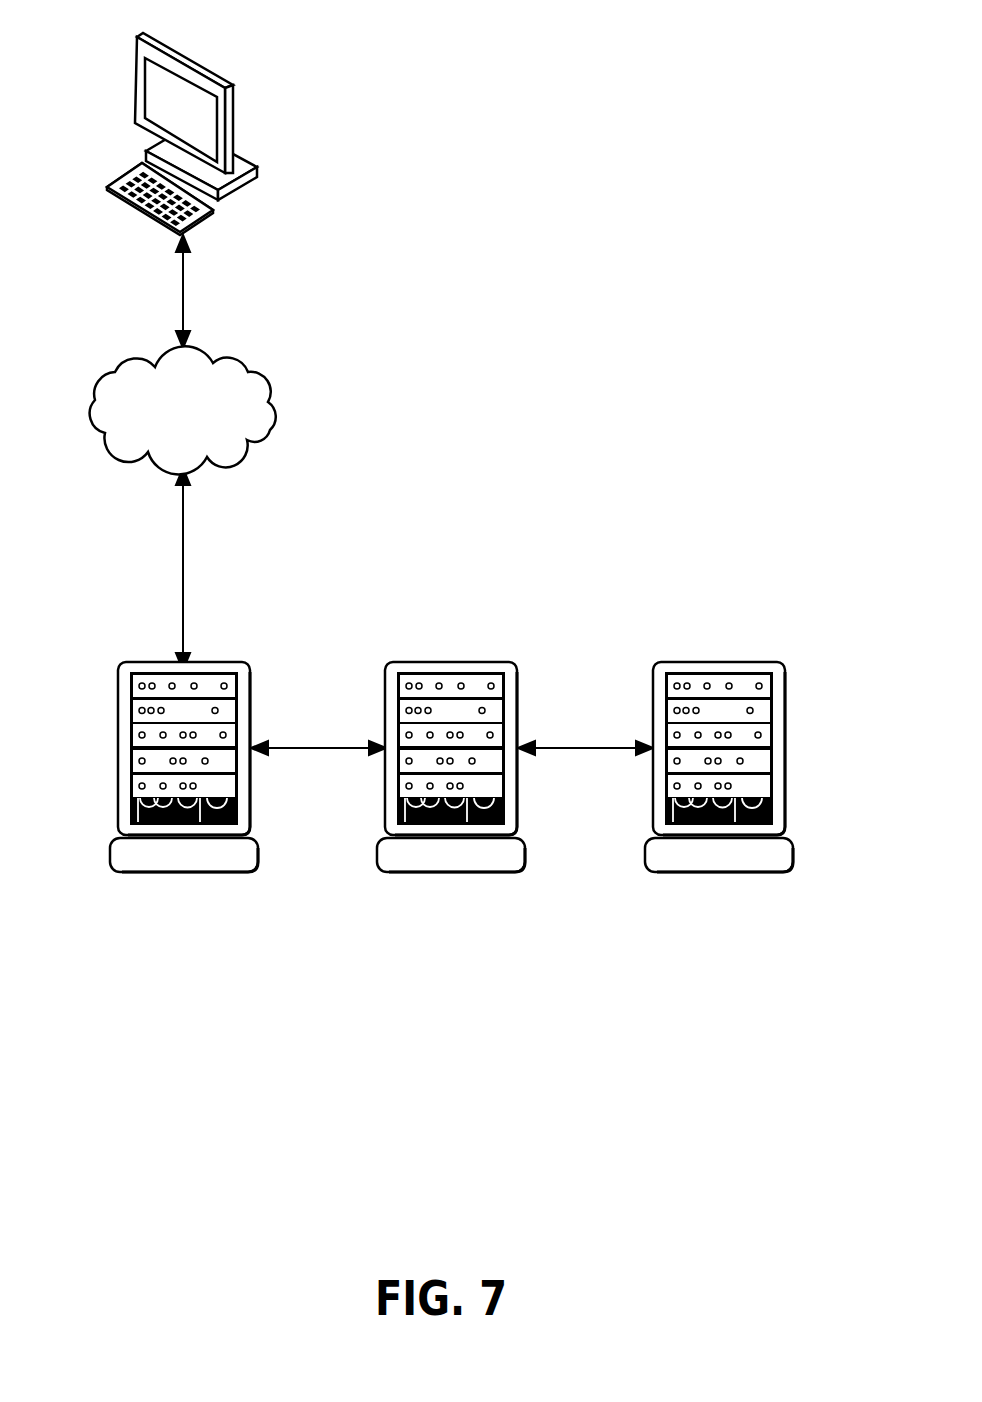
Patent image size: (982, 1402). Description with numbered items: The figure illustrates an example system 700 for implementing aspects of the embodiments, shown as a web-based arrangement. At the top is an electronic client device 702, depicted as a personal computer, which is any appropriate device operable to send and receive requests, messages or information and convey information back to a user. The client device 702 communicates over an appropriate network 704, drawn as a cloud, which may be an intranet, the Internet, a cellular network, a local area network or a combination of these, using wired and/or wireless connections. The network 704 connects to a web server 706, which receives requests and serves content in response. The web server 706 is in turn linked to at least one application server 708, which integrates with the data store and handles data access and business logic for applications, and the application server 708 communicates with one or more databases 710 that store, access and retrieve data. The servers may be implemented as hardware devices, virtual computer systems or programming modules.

The system 700 is at (727, 303).
The electronic client device 702 is at (178, 58).
The network 704 is at (277, 376).
The web server 706 is at (118, 749).
The application server 708 is at (495, 661).
The databases 710 is at (758, 661).